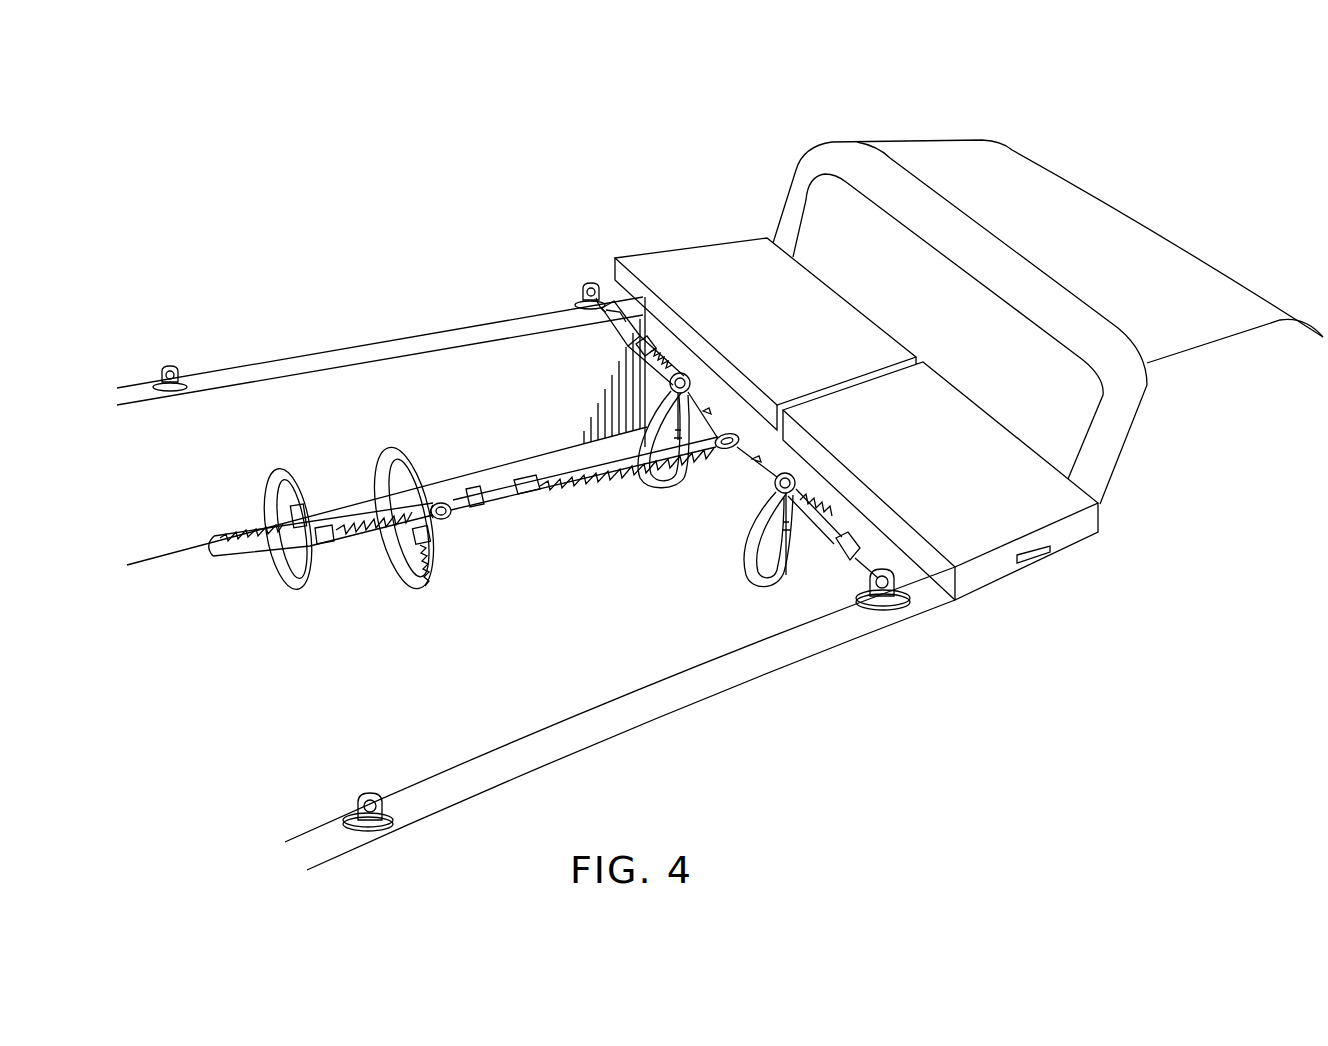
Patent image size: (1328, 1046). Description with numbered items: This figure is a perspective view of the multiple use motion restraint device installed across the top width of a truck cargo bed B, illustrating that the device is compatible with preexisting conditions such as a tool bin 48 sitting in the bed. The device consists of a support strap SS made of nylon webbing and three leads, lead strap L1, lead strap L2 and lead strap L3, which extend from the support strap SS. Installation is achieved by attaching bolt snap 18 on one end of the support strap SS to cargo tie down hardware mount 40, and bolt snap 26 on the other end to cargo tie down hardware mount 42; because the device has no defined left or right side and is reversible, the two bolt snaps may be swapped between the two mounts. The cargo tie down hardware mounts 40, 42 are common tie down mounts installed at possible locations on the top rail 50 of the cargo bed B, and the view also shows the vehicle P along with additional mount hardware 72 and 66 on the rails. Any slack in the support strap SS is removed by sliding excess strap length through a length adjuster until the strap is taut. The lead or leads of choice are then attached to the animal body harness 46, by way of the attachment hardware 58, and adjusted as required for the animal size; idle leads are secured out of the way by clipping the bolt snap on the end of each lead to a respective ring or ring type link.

The vehicle body / pontoon P is at (932, 165).
The cargo bed B is at (388, 692).
The tool bin 48 is at (735, 288).
The bolt snap 26 is at (863, 572).
The support strap SS is at (820, 520).
The bolt snap 18 is at (592, 282).
The cargo tie down hardware mount 40 is at (603, 303).
The eye bolt on left rail 72 is at (177, 370).
The clip 58 is at (447, 503).
The animal body harness 46 is at (227, 537).
The lead strap L1 is at (663, 510).
The lead strap L2 is at (740, 560).
The lead strap L3 is at (563, 530).
The cargo tie down hardware mount 42 is at (903, 600).
The top rail 50 is at (690, 688).
The eye bolt on lower rail 66 is at (355, 805).